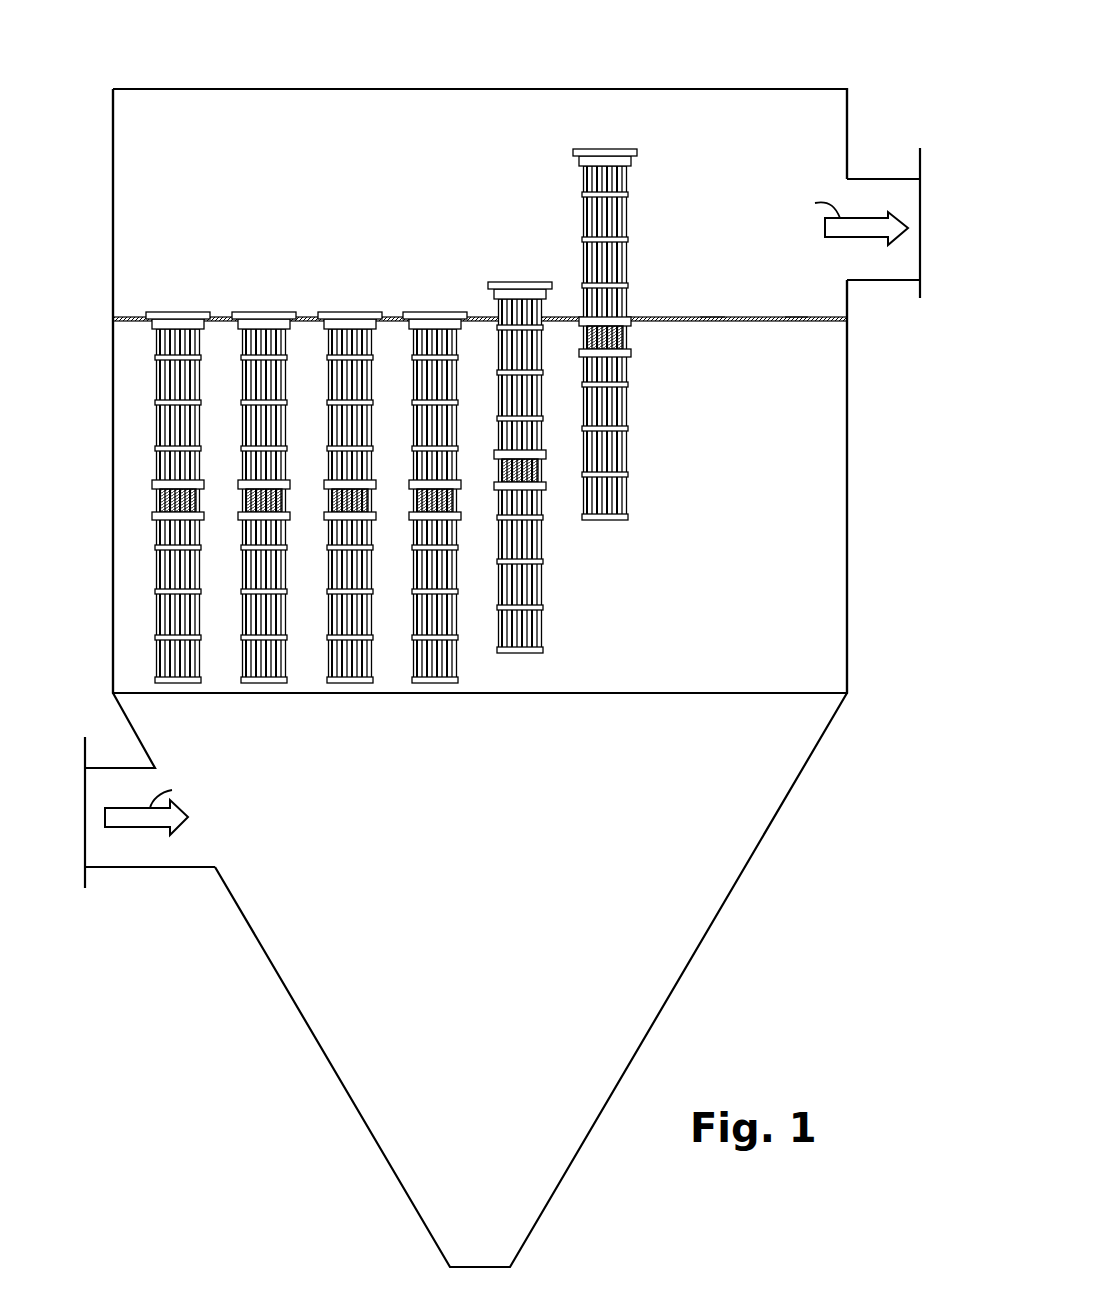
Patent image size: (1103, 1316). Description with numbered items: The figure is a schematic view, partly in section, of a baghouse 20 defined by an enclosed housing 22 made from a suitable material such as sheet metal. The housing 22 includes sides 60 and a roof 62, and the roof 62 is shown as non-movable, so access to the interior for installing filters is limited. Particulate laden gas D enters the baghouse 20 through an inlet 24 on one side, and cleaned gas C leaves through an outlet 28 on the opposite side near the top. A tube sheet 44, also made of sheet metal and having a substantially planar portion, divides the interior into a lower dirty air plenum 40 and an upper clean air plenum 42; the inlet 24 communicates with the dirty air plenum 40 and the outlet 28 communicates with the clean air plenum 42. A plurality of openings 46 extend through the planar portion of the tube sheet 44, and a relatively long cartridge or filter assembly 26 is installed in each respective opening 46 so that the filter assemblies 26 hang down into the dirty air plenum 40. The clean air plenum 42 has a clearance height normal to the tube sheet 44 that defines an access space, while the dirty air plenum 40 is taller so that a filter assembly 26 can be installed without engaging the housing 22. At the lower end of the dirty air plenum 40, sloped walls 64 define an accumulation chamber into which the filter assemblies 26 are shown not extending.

The baghouse 20 is at (830, 50).
The housing 22 is at (850, 83).
The inlet 24 is at (125, 867).
The filter assemblies 26 is at (192, 293).
The outlet 28 is at (892, 281).
The dirty air plenum 40 is at (482, 771).
The clean air plenum 42 is at (367, 170).
The tube sheet 44 is at (732, 318).
The openings 46 is at (713, 321).
The sides 60 is at (113, 482).
The roof 62 is at (328, 89).
The sloped walls 64 is at (312, 1018).